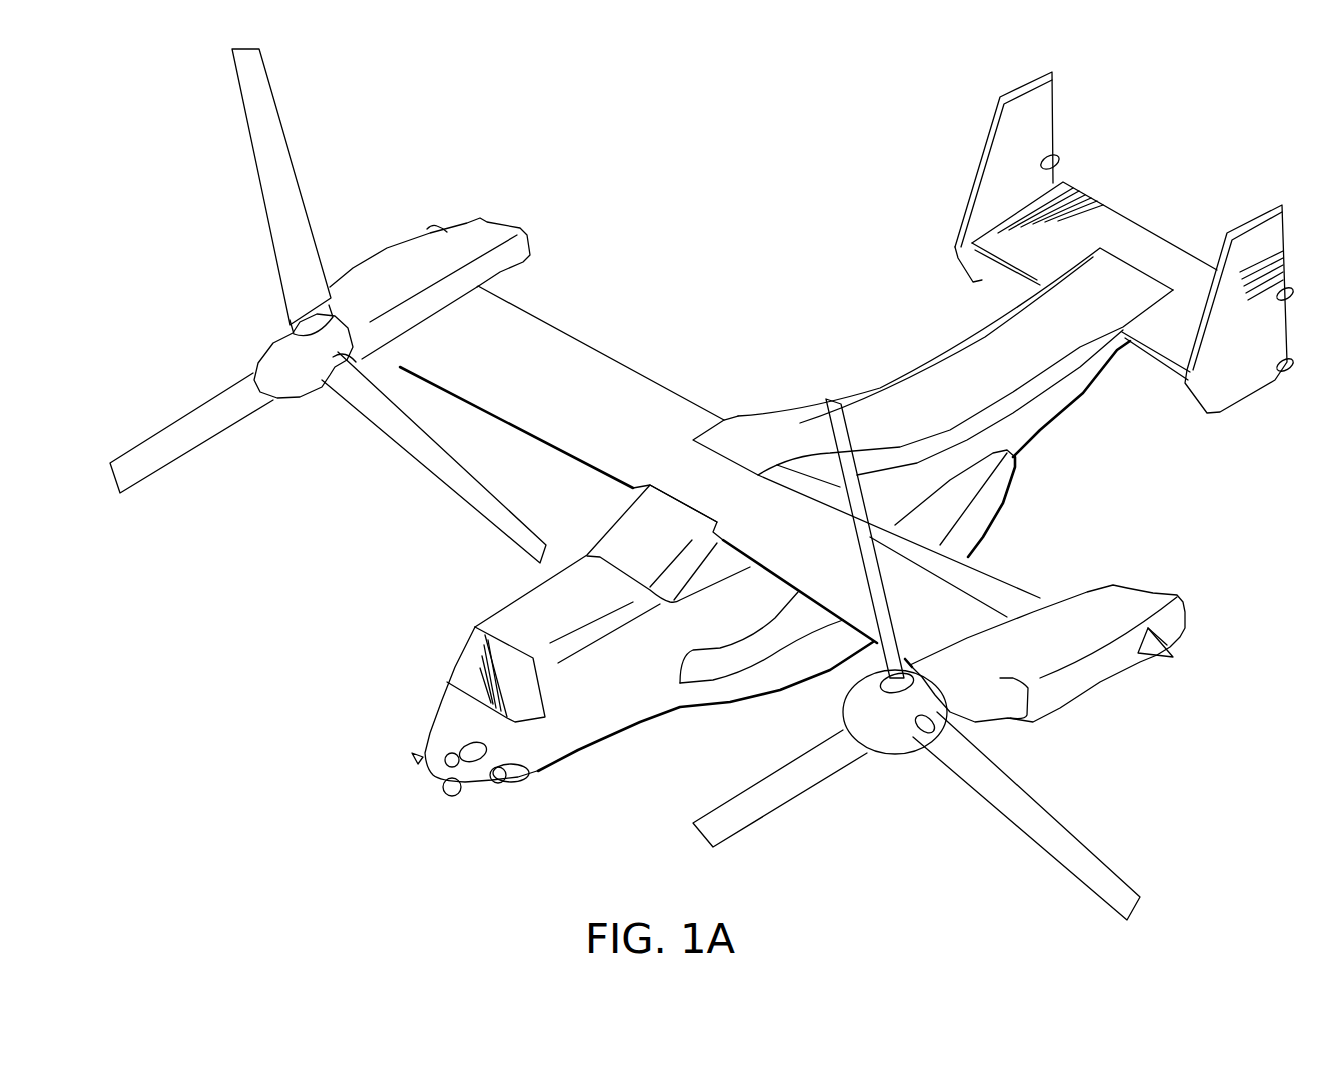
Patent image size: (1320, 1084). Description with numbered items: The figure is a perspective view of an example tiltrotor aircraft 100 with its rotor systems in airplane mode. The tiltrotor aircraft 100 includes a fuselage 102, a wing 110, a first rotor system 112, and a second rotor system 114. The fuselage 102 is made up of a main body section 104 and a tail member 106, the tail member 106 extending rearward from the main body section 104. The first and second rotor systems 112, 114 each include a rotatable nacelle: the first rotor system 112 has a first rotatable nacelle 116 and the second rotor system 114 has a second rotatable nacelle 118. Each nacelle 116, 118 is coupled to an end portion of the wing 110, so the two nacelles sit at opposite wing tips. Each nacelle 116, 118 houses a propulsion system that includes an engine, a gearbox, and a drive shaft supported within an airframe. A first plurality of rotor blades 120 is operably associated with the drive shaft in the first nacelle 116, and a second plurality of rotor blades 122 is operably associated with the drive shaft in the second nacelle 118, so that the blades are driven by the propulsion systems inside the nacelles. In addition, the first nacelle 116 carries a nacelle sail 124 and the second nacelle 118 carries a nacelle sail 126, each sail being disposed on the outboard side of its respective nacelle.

The tiltrotor aircraft 100 is at (833, 171).
The fuselage 102 is at (543, 737).
The main body section 104 is at (618, 738).
The tail member 106 is at (1130, 232).
The wing 110 is at (601, 353).
The first rotor system 112 is at (875, 773).
The second rotor system 114 is at (293, 413).
The first rotatable nacelle 116 is at (995, 640).
The second rotatable nacelle 118 is at (387, 265).
The first plurality of rotor blades 120 is at (1077, 833).
The second plurality of rotor blades 122 is at (297, 177).
The nacelle sail 124 is at (1153, 660).
The nacelle sail 126 is at (437, 227).